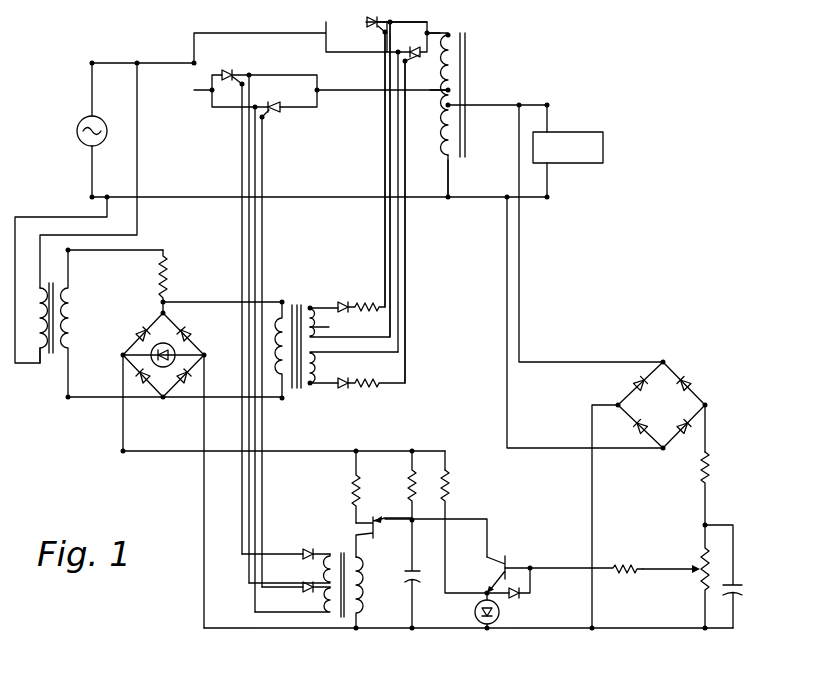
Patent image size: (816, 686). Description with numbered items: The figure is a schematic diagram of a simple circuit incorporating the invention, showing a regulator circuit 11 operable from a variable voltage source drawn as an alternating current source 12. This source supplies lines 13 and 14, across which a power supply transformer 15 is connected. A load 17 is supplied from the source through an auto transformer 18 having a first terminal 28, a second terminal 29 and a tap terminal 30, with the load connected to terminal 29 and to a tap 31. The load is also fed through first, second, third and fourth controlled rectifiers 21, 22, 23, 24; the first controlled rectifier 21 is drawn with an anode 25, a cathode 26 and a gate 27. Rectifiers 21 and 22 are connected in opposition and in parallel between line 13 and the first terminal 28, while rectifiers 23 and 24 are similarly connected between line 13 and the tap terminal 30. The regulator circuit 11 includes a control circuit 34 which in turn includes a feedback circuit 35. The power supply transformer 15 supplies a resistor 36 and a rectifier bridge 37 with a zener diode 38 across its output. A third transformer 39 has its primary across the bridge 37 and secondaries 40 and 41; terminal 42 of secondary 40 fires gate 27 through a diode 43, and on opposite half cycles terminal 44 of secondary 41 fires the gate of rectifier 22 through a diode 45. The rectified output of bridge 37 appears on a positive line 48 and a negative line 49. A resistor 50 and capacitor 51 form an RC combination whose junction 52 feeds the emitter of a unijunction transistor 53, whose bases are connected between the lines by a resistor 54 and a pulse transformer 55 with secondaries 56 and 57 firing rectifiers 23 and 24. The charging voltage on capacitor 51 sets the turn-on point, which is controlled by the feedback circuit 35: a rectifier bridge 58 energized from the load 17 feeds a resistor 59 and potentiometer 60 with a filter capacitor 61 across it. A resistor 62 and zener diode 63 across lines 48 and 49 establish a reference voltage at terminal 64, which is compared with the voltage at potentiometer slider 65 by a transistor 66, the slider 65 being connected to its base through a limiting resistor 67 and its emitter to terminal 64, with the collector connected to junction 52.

The regulator circuit 11 is at (323, 155).
The alternating current source 12 is at (78, 127).
The line 13 is at (166, 62).
The line 14 is at (176, 196).
The power supply transformer 15 is at (53, 357).
The load 17 is at (604, 155).
The auto transformer 18 is at (467, 72).
The first controlled rectifier 21 is at (366, 26).
The second controlled rectifier 22 is at (417, 202).
The third controlled rectifier 23 is at (228, 69).
The fourth controlled rectifier 24 is at (281, 105).
The anode 25 is at (366, 20).
The cathode 26 is at (376, 29).
The gate 27 is at (384, 35).
The first terminal 28 is at (450, 34).
The second terminal 29 is at (446, 205).
The tap terminal 30 is at (447, 93).
The tap 31 is at (452, 107).
The control circuit 34 is at (428, 425).
The feedback circuit 35 is at (541, 413).
The resistor 36 is at (168, 281).
The rectifier bridge 37 is at (128, 348).
The zener diode 38 is at (168, 332).
The third transformer 39 is at (298, 305).
The secondary 40 is at (329, 327).
The secondary 41 is at (314, 373).
The terminal 42 is at (316, 306).
The diode 43 is at (349, 307).
The terminal 44 is at (313, 386).
The diode 45 is at (350, 389).
The positive line 48 is at (283, 450).
The negative line 49 is at (232, 629).
The resistor 50 is at (416, 489).
The capacitor 51 is at (414, 571).
The junction 52 is at (414, 519).
The unijunction transistor 53 is at (375, 518).
The resistor 54 is at (352, 479).
The pulse transformer 55 is at (343, 616).
The secondary 56 is at (338, 550).
The secondary 57 is at (327, 599).
The rectifier bridge 58 is at (654, 415).
The resistor 59 is at (708, 478).
The potentiometer 60 is at (702, 556).
The filter capacitor 61 is at (737, 598).
The resistor 62 is at (447, 483).
The zener diode 63 is at (475, 619).
The terminal 64 is at (483, 589).
The potentiometer slider 65 is at (696, 575).
The transistor 66 is at (508, 563).
The limiting resistor 67 is at (620, 567).